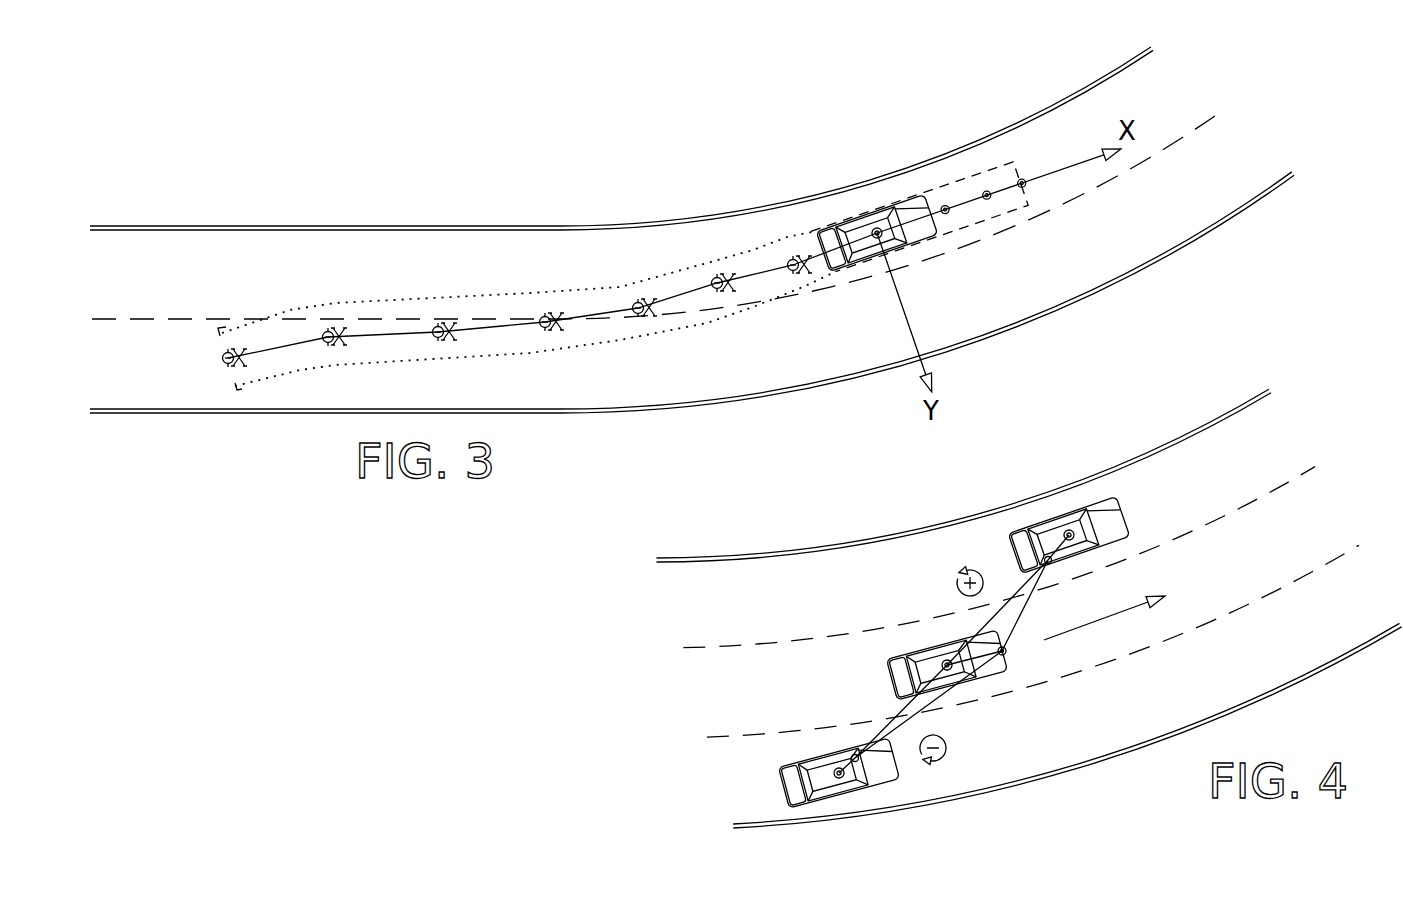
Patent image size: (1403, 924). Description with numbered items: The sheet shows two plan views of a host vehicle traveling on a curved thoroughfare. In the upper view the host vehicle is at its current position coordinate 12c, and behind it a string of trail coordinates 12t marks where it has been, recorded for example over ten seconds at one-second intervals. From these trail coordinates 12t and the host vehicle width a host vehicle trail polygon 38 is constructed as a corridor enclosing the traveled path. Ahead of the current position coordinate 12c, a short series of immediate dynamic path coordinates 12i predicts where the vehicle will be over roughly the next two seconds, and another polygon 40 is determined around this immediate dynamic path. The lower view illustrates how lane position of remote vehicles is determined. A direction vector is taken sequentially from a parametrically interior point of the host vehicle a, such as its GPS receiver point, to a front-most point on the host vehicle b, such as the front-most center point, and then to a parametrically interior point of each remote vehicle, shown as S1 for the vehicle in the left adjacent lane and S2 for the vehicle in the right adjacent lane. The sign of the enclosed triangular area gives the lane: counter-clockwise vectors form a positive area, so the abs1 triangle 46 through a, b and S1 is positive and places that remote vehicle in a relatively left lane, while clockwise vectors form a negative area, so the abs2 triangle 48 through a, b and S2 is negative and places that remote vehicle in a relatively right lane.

In FIG. 3, the host vehicle trail polygon 38 is at (718, 257).
In FIG. 3, the trail coordinates 12t is at (792, 258).
In FIG. 3, the current position coordinate 12c is at (875, 226).
In FIG. 3, the immediate dynamic path polygon 40 is at (963, 180).
In FIG. 3, the immediate dynamic path coordinates 12i is at (1019, 180).
In FIG. 4, the abs1 triangle 46 is at (1012, 588).
In FIG. 4, the abs2 triangle 48 is at (895, 717).
In FIG. 4, the remote vehicle interior point S1 is at (1069, 530).
In FIG. 4, the remote vehicle interior point S2 is at (838, 768).
In FIG. 4, the parametrically interior point of the host vehicle a is at (952, 672).
In FIG. 4, the front-most point on the host vehicle b is at (1003, 656).